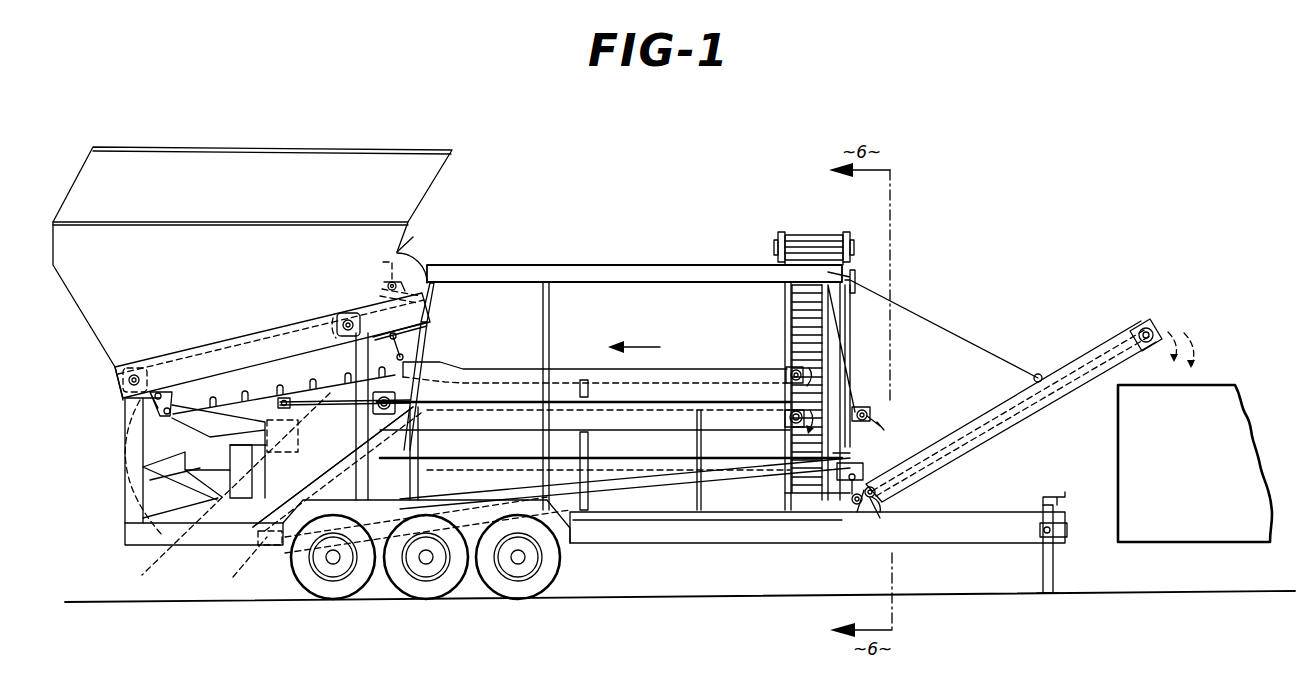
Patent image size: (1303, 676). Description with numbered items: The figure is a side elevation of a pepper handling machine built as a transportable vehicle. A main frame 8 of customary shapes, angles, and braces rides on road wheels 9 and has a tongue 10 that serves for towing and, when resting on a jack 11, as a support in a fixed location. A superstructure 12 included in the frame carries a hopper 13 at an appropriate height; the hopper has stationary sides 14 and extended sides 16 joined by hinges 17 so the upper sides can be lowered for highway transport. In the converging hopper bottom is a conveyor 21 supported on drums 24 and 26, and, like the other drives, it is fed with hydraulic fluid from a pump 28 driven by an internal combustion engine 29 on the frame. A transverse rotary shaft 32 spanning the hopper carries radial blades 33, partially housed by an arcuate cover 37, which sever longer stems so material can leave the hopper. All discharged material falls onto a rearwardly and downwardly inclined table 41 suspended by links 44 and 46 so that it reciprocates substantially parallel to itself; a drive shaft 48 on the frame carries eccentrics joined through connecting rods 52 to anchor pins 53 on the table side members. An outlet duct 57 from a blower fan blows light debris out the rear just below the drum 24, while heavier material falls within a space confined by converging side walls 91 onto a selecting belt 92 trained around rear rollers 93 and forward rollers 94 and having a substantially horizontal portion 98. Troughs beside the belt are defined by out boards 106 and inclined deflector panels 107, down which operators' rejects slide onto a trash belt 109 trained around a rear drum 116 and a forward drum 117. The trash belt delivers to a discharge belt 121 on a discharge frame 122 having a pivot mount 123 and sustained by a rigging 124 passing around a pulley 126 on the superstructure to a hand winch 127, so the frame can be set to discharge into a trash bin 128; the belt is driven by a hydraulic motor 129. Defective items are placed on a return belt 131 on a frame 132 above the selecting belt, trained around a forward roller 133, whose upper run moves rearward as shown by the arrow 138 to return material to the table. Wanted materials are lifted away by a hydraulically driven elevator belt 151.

The main frame 8 is at (733, 550).
The road wheels 9 is at (483, 573).
The tongue 10 is at (975, 545).
The jack 11 is at (1056, 578).
The superstructure 12 is at (637, 250).
The hopper 13 is at (413, 236).
The stationary sides 14 is at (250, 285).
The extended sides 16 is at (274, 198).
The hinges 17 is at (220, 220).
The conveyor 21 is at (181, 342).
The drum 24 is at (154, 353).
The drum 26 is at (340, 309).
The pump 28 is at (240, 488).
The internal combustion engine 29 is at (323, 487).
The rotary shaft 32 is at (386, 283).
The radial blades 33 is at (382, 262).
The arcuate cover 37 is at (419, 258).
The table 41 is at (266, 379).
The link 44 is at (168, 406).
The link 46 is at (420, 336).
The drive shaft 48 is at (421, 378).
The connecting rods 52 is at (318, 408).
The anchor pins 53 is at (282, 408).
The outlet duct 57 is at (203, 444).
The converging side walls 91 is at (143, 493).
The selecting belt 92 is at (200, 532).
The rollers 93 is at (152, 556).
The rollers 94 is at (802, 408).
The horizontal portion 98 is at (488, 410).
The out boards 106 is at (600, 415).
The inclined deflector panels 107 is at (649, 450).
The trash belt 109 is at (556, 524).
The drum 116 is at (253, 566).
The drum 117 is at (845, 500).
The discharge belt 121 is at (1078, 358).
The discharge frame 122 is at (1023, 415).
The pivot mount 123 is at (881, 511).
The rigging 124 is at (933, 328).
The pulley 126 is at (851, 270).
The hand winch 127 is at (882, 428).
The trash bin 128 is at (1118, 463).
The hydraulic motor 129 is at (1144, 318).
The return belt 131 is at (681, 372).
The frame 132 is at (743, 373).
The roller 133 is at (801, 372).
The arrow 138 is at (651, 345).
The elevator belt 151 is at (823, 206).